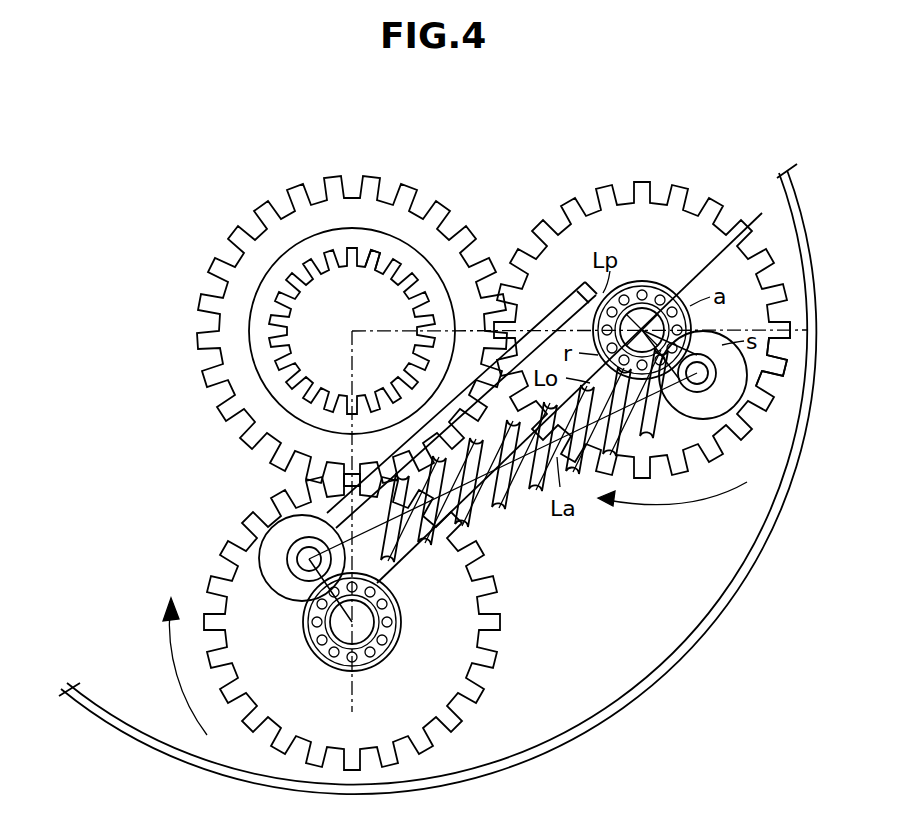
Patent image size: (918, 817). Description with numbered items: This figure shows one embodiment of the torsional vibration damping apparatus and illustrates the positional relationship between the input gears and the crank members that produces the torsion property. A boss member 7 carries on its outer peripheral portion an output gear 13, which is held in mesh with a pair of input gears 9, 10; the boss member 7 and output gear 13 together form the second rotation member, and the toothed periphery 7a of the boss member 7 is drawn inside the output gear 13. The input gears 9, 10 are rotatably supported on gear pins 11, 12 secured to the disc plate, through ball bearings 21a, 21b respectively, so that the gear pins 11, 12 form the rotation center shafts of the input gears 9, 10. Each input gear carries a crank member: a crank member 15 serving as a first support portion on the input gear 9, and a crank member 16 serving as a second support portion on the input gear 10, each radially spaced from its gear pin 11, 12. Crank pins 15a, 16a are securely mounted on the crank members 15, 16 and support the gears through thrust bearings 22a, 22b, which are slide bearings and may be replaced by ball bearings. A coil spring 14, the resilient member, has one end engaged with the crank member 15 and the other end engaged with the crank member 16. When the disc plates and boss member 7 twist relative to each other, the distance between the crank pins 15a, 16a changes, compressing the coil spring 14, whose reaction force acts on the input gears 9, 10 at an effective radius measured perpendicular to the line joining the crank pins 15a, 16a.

The boss member 7 is at (341, 248).
The gear teeth 7a is at (378, 262).
The input gear 9 is at (655, 210).
The input gear 10 is at (470, 636).
The gear pin 11 is at (642, 318).
The gear pin 12 is at (362, 628).
The output gear 13 is at (334, 206).
The coil spring 14 is at (500, 507).
The crank member 15 is at (753, 378).
The crank pin 15a is at (757, 352).
The crank member 16 is at (287, 542).
The crank pin 16a is at (293, 560).
The ball bearing 21a is at (662, 292).
The ball bearing 21b is at (330, 657).
The thrust bearing 22a is at (705, 390).
The thrust bearing 22b is at (297, 575).